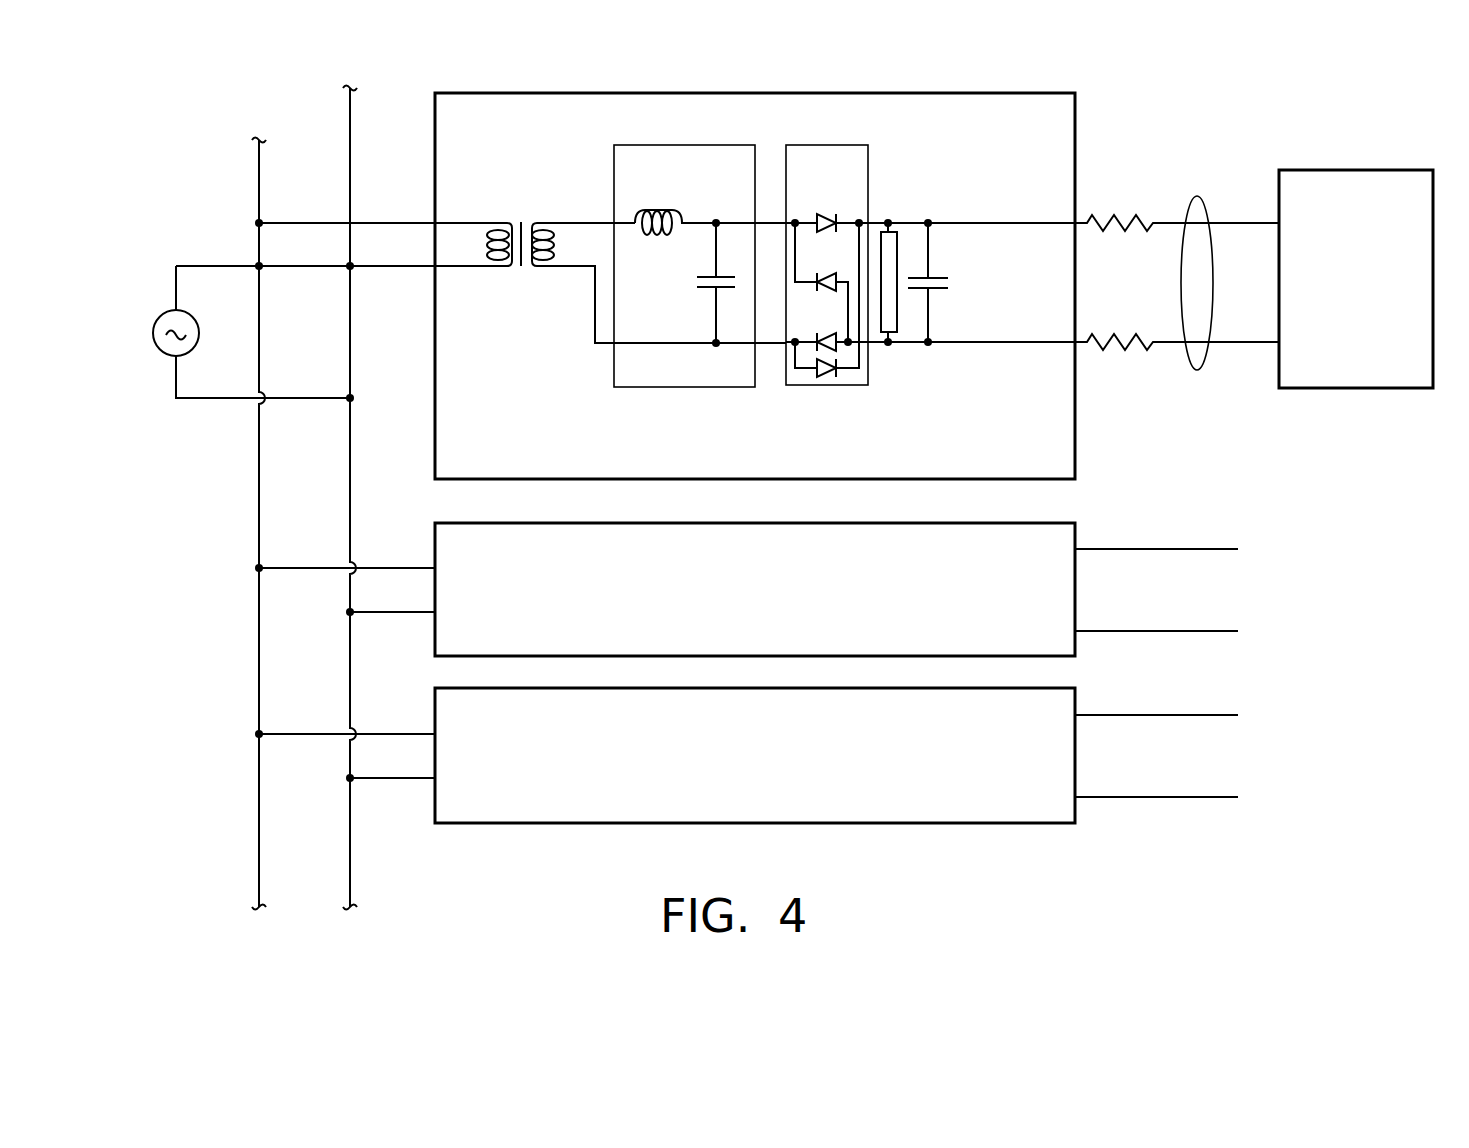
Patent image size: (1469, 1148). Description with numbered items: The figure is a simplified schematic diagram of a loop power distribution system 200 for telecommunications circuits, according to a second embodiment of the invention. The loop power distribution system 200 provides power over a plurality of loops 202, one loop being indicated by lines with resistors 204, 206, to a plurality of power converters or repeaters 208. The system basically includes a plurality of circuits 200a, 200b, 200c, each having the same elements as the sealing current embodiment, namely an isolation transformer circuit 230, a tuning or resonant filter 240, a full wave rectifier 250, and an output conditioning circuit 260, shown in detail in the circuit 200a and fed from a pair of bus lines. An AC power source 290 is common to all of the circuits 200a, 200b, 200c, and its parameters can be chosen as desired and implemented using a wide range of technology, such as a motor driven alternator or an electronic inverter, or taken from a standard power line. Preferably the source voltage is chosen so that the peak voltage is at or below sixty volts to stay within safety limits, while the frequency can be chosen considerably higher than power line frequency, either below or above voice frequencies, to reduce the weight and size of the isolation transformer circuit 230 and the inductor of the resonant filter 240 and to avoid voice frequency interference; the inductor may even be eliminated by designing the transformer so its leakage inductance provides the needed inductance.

The loop power distribution system 200 is at (325, 131).
The circuit 200a is at (1075, 92).
The circuit 200b is at (1058, 523).
The circuit 200c is at (1058, 688).
The loops 202 is at (1200, 197).
The resistor 204 is at (1101, 218).
The resistor 206 is at (1101, 338).
The power converter or repeater 208 is at (1387, 170).
The isolation transformer circuit 230 is at (528, 220).
The tuning or resonant filter 240 is at (697, 145).
The full wave rectifier 250 is at (833, 145).
The output conditioning circuit 260 is at (903, 218).
The AC power source 290 is at (159, 316).